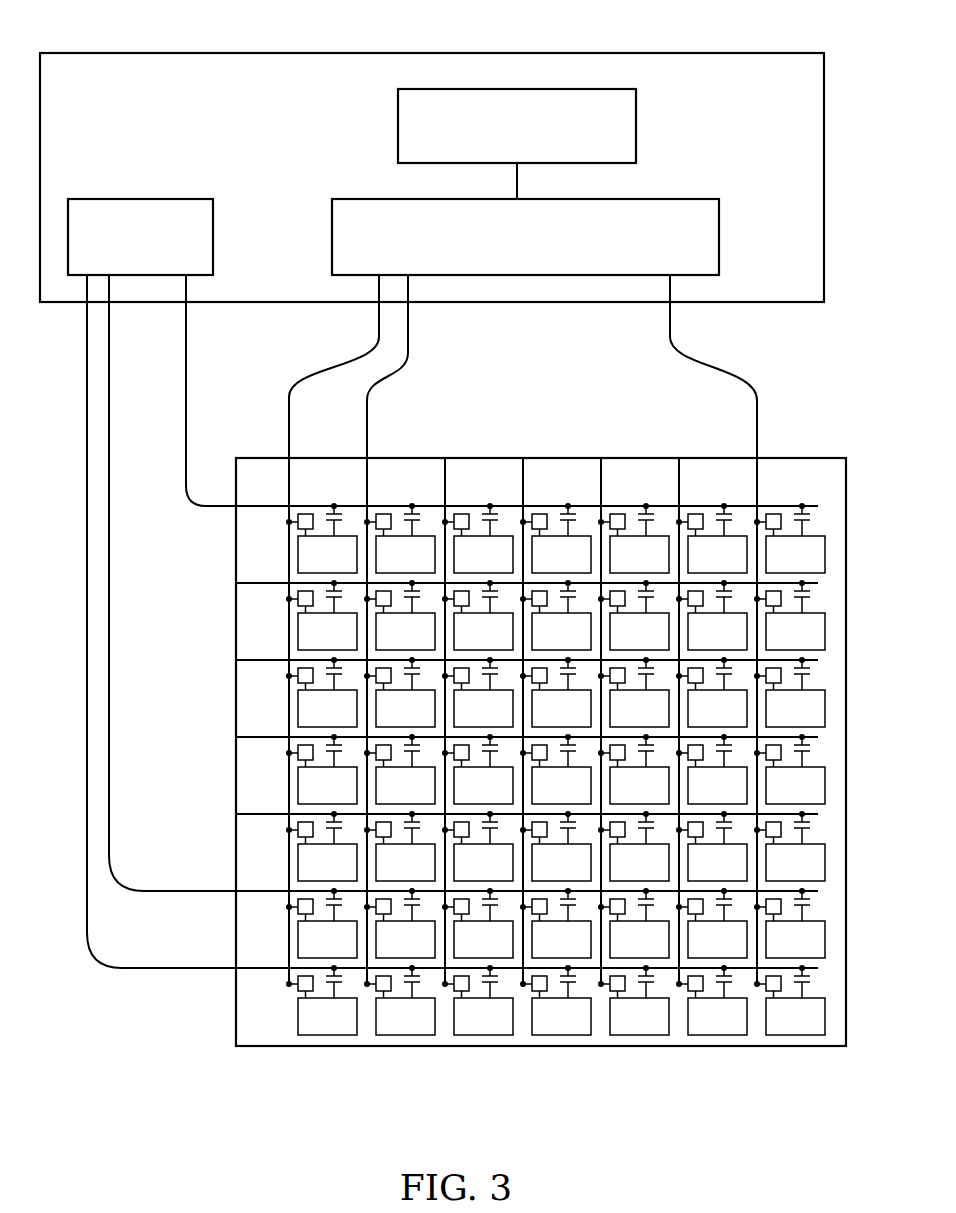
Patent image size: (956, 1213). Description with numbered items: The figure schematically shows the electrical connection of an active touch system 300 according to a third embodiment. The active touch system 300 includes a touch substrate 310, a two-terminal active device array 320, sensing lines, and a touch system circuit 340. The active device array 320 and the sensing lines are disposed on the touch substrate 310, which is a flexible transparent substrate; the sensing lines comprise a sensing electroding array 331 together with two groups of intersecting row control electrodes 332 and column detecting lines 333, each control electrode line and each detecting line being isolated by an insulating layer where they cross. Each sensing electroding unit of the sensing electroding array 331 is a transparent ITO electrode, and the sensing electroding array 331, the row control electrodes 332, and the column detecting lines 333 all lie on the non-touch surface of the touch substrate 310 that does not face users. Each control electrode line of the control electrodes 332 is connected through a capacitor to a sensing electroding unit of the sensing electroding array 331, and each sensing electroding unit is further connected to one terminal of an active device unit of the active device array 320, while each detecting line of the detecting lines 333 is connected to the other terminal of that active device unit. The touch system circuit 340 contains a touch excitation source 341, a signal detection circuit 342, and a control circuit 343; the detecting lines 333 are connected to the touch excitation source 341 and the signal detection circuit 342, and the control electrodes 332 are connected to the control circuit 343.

The active touch system 300 is at (443, 556).
The touch system circuit 340 is at (432, 177).
The touch excitation source 341 is at (517, 126).
The signal detection circuit 342 is at (525, 237).
The control circuit 343 is at (140, 237).
The column detecting lines 333 is at (644, 413).
The row control electrodes 332 is at (193, 760).
The two-terminal active device array 320 is at (296, 993).
The sensing electroding array 331 is at (326, 1035).
The touch substrate 310 is at (236, 1047).